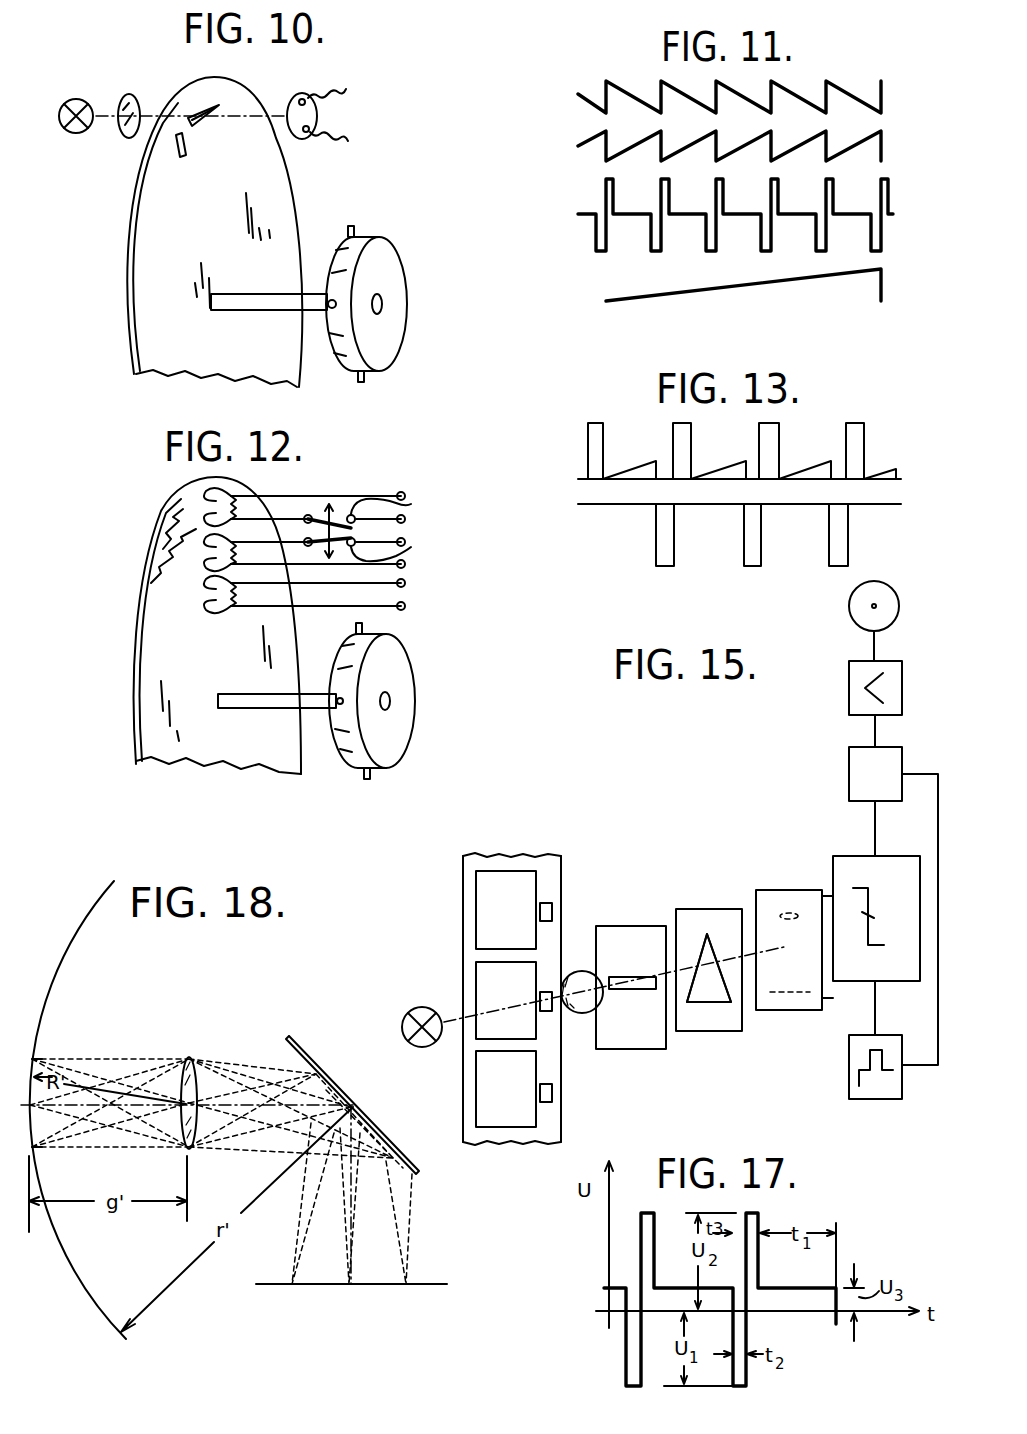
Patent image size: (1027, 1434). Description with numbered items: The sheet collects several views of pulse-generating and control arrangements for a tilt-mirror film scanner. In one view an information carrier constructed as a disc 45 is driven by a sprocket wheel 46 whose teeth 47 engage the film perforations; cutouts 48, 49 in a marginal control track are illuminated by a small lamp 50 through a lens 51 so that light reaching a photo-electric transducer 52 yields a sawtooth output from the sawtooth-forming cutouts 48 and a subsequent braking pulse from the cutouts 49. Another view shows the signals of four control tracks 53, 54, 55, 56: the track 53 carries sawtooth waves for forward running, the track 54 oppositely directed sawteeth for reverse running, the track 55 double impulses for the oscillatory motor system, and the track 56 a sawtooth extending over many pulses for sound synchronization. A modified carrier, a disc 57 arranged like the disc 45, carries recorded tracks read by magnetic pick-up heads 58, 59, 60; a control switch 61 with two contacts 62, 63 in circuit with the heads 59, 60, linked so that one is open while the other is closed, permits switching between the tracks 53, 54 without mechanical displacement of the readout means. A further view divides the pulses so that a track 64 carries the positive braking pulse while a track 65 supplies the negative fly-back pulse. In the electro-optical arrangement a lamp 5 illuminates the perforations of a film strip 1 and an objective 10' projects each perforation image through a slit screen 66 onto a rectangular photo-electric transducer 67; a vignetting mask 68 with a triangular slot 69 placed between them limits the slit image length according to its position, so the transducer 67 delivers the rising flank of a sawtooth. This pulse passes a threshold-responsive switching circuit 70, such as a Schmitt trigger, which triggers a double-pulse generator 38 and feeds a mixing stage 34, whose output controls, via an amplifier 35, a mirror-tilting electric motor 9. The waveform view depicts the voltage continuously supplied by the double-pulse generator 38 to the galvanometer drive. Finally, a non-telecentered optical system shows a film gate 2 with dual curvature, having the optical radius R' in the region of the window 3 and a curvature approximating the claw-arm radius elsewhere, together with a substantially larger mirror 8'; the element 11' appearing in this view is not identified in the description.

In FIG. 10, the disc 45 is at (133, 208).
In FIG. 10, the sprocket wheel 46 is at (387, 252).
In FIG. 12, the sprocket wheel 46 is at (398, 678).
In FIG. 10, the teeth 47 is at (344, 218).
In FIG. 12, the teeth 47 is at (368, 777).
In FIG. 10, the cutouts 48 is at (192, 100).
In FIG. 10, the cutouts 49 is at (168, 137).
In FIG. 10, the small lamp 50 is at (68, 91).
In FIG. 10, the lens 51 is at (123, 87).
In FIG. 10, the photo-electric transducer 52 is at (292, 85).
In FIG. 11, the control track 53 is at (884, 155).
In FIG. 12, the control track 53 is at (153, 582).
In FIG. 11, the control track 54 is at (884, 86).
In FIG. 12, the control track 54 is at (163, 540).
In FIG. 11, the control track 55 is at (895, 212).
In FIG. 11, the control track 56 is at (884, 284).
In FIG. 12, the disc 57 is at (143, 660).
In FIG. 12, the magnetic pick-up head 58 is at (215, 612).
In FIG. 12, the magnetic pick-up head 59 is at (208, 560).
In FIG. 12, the magnetic pick-up head 60 is at (205, 490).
In FIG. 12, the control switch 61 is at (330, 505).
In FIG. 12, the contact 62 is at (395, 508).
In FIG. 12, the contact 63 is at (395, 544).
In FIG. 13, the track 64 is at (885, 475).
In FIG. 13, the track 65 is at (890, 508).
In FIG. 15, the film strip 1 is at (543, 850).
In FIG. 15, the lamp 5 is at (415, 1000).
In FIG. 15, the mirror-tilting electric motor 9 is at (841, 598).
In FIG. 15, the objective 10' is at (582, 958).
In FIG. 18, the objective 10' is at (186, 1078).
In FIG. 15, the mixing stage 34 is at (841, 750).
In FIG. 15, the amplifier 35 is at (841, 670).
In FIG. 15, the double-pulse generator 38 is at (841, 1038).
In FIG. 15, the screen 66 is at (622, 919).
In FIG. 15, the photo-electric transducer 67 is at (777, 883).
In FIG. 15, the vignetting mask 68 is at (697, 906).
In FIG. 15, the triangular slot 69 is at (703, 998).
In FIG. 15, the threshold-responsive switching circuit 70 is at (841, 852).
In FIG. 18, the film gate 2 is at (62, 1259).
In FIG. 18, the window 3 is at (24, 1062).
In FIG. 18, the mirror 8' is at (352, 1092).
In FIG. 18, the image plane 11' is at (352, 1265).